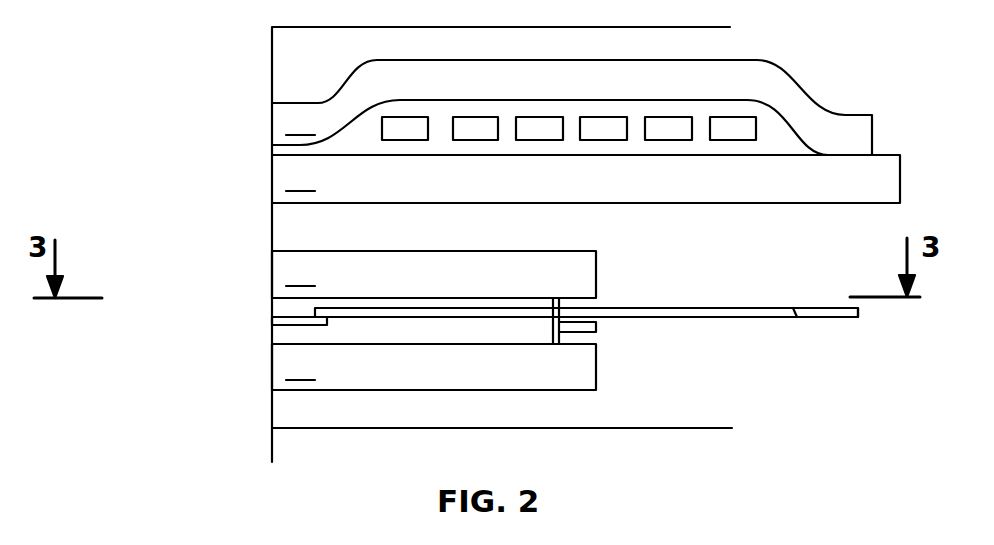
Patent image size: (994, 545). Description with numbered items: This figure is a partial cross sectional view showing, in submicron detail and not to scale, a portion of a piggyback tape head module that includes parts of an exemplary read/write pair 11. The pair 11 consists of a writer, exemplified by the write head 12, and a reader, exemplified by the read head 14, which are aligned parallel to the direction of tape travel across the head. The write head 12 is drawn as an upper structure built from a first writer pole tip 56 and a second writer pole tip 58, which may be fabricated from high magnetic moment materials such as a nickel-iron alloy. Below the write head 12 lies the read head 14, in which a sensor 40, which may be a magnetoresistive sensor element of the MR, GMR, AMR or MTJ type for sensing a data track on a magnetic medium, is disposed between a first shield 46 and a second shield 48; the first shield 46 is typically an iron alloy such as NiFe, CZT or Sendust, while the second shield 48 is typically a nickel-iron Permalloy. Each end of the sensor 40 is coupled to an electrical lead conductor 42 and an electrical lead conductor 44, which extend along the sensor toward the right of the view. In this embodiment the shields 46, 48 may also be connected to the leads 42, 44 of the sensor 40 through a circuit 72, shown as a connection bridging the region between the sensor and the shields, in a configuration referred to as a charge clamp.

The R/W pair 11 is at (140, 86).
The write head 12 is at (178, 85).
The read head 14 is at (178, 250).
The second writer pole tip 58 is at (272, 125).
The first writer pole tip 56 is at (272, 178).
The second shield 48 is at (272, 275).
The first shield 46 is at (272, 368).
The sensor 40 is at (272, 321).
The electrical lead conductor 42 is at (757, 308).
The electrical lead conductor 44 is at (830, 308).
The circuit 72 is at (550, 338).